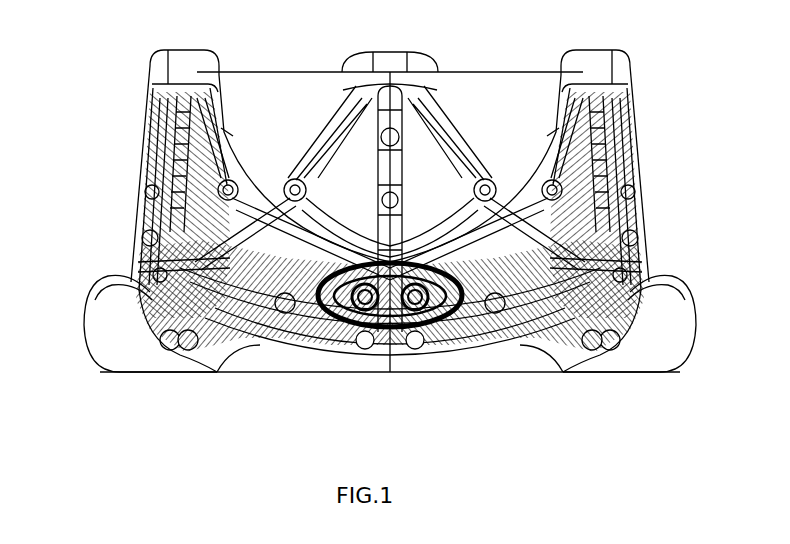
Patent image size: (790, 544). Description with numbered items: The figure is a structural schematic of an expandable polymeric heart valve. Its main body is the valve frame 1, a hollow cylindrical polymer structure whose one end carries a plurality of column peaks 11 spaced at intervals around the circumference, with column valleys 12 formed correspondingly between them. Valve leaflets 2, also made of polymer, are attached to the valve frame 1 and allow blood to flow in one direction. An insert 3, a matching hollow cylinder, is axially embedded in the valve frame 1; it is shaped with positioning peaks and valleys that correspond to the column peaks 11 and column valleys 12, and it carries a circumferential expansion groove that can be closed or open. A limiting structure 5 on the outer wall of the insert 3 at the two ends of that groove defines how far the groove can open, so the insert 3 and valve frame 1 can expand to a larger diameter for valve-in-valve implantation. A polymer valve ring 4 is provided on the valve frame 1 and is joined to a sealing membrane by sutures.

The valve frame 1 is at (131, 158).
The column peaks 11 is at (170, 50).
The valve leaflets 2 is at (316, 73).
The insert 3 is at (152, 100).
The valve ring 4 is at (105, 290).
The column valleys 12 is at (398, 246).
The limiting structure 5 is at (470, 362).